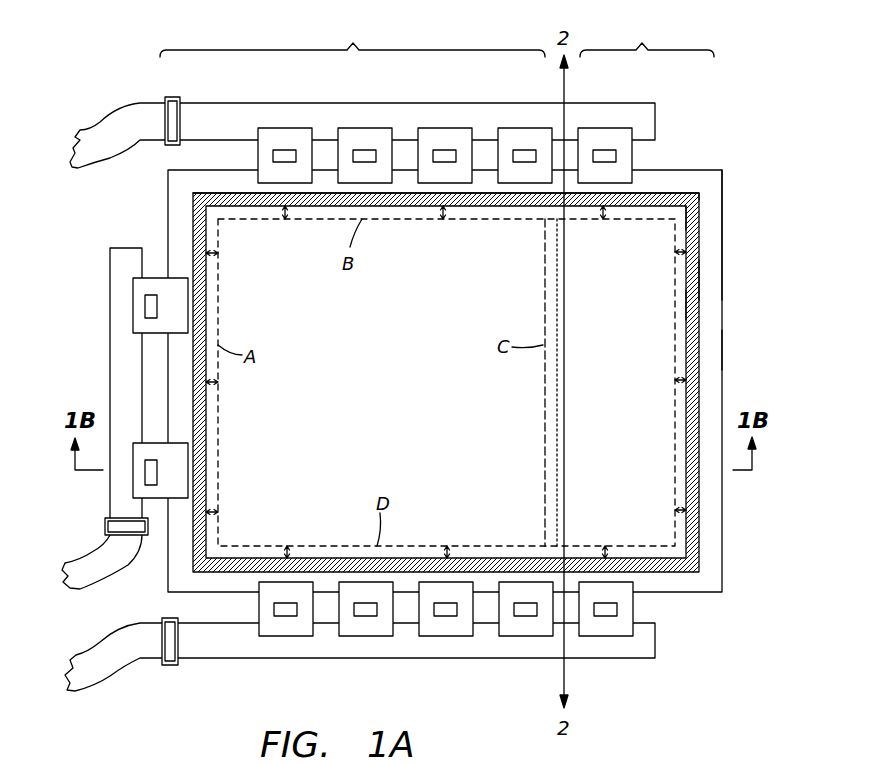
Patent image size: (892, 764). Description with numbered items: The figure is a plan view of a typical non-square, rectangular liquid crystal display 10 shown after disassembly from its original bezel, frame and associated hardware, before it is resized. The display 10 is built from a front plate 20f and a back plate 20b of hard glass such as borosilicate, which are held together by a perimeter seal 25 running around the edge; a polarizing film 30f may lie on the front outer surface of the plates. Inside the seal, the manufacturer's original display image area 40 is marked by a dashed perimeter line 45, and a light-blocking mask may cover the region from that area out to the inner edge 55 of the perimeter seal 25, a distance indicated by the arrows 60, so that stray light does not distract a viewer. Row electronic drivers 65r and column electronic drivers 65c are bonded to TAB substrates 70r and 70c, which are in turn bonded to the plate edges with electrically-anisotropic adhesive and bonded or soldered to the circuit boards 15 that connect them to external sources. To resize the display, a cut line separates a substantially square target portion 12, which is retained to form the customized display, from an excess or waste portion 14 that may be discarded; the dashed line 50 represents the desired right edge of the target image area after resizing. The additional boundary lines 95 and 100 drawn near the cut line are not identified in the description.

The liquid crystal display 10 is at (708, 153).
The target portion 12 is at (352, 38).
The excess or waste portion 14 is at (647, 38).
The circuit boards 15 is at (645, 118).
The front plate 20f is at (699, 196).
The back plate 20b is at (710, 250).
The perimeter seal 25 is at (212, 194).
The polarizing film 30f is at (697, 226).
The display image area 40 is at (650, 352).
The dashed perimeter line 45 is at (697, 278).
The dashed line 50 is at (543, 293).
The inner edge of perimeter seal 55 is at (685, 305).
The arrows 60 is at (443, 210).
The column electronic drivers 65c is at (288, 148).
The row electronic drivers 65r is at (148, 307).
The TAB substrates 70c is at (268, 133).
The TAB substrates 70r is at (142, 325).
The boundary line 95 is at (558, 270).
The boundary line 100 is at (560, 380).